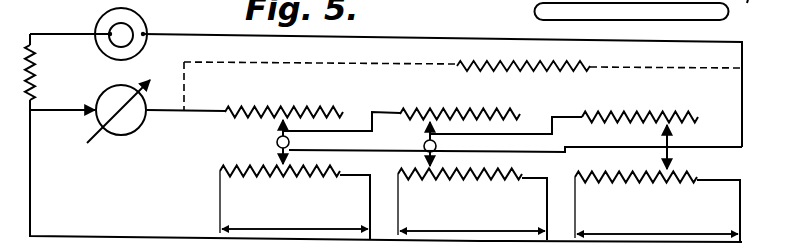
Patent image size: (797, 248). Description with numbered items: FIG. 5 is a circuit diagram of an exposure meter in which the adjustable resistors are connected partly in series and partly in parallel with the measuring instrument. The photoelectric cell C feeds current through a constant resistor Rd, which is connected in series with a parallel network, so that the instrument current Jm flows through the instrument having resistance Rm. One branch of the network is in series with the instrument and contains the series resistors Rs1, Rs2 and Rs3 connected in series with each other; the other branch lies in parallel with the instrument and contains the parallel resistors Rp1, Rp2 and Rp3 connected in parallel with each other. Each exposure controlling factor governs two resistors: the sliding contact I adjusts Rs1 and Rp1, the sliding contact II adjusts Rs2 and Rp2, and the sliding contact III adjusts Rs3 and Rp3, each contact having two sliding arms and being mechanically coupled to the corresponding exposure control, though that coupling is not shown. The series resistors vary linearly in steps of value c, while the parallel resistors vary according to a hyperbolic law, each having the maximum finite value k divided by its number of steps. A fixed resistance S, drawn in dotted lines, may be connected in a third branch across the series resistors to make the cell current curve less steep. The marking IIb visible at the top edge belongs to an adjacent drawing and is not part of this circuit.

The photoelectric cell C is at (137, 27).
The constant resistor Rd is at (29, 62).
The instrument current Jm is at (52, 100).
The measuring instrument resistance Rm is at (136, 123).
The series resistor for factor I Rs1 is at (248, 108).
The series resistor for factor II Rs2 is at (434, 111).
The series resistor for factor III Rs3 is at (614, 113).
The parallel resistor for factor I Rp1 is at (290, 196).
The parallel resistor for factor II Rp2 is at (460, 180).
The parallel resistor for factor III Rp3 is at (667, 202).
The sliding contact for factor I is at (278, 139).
The sliding contact for factor II is at (425, 142).
The sliding contact for factor III is at (665, 147).
The fixed resistance S is at (510, 62).
The maximum resistance value k is at (479, 204).
The winding of adjacent figure IIb is at (533, 3).